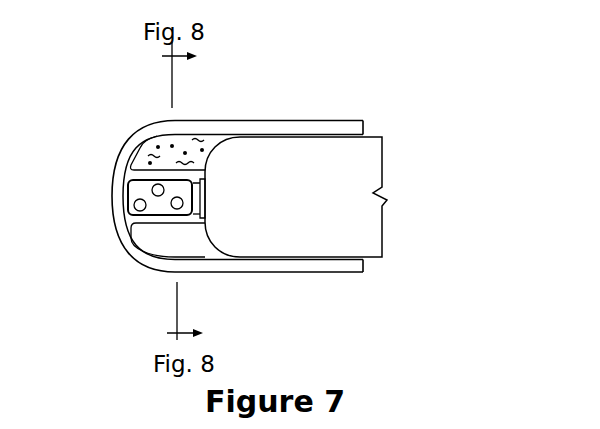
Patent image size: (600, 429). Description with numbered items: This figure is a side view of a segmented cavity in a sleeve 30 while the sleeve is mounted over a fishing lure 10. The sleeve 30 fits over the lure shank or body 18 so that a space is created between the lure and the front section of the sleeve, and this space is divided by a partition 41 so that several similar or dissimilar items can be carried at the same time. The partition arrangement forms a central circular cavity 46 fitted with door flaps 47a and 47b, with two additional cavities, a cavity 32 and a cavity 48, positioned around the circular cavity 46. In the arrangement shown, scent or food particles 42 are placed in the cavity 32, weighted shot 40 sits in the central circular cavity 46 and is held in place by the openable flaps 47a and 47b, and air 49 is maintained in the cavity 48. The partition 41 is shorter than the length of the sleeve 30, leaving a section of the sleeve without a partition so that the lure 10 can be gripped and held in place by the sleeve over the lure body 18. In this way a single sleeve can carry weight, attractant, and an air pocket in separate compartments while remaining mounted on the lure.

The fishing lure 10 is at (417, 80).
The lure shank (body) 18 is at (348, 175).
The sleeve 30 is at (320, 86).
The cavity 32 is at (165, 137).
The weighted shot 40 is at (136, 200).
The partition 41 is at (142, 163).
The scent or food particles 42 is at (195, 138).
The central circular cavity 46 is at (133, 196).
The door flap 47a is at (200, 188).
The door flap 47b is at (200, 210).
The cavity 48 is at (152, 240).
The air 49 is at (188, 243).